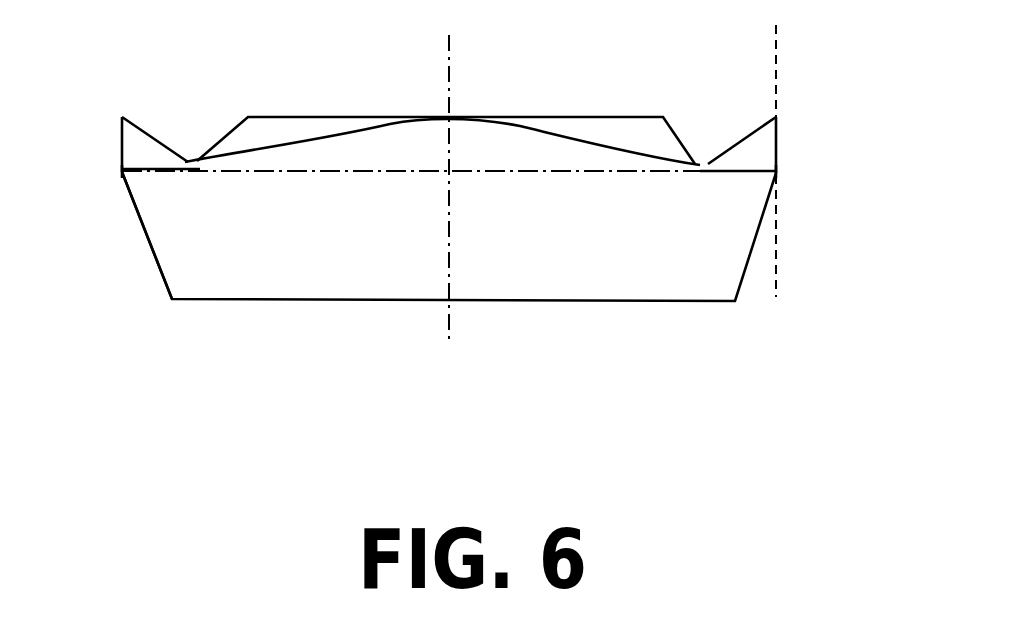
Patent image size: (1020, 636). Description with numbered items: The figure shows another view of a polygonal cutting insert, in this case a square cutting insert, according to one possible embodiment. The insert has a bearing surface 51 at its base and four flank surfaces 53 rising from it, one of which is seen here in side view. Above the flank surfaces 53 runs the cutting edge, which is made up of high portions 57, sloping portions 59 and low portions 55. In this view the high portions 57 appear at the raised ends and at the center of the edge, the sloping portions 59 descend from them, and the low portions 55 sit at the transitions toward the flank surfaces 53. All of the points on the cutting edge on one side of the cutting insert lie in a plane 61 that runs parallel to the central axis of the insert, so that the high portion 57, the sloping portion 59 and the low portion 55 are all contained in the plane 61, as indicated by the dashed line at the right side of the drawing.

The bearing surface 51 is at (380, 302).
The flank surface 53 is at (147, 242).
The low portion 55 is at (122, 172).
The high portion 57 is at (122, 117).
The sloping portion 59 is at (575, 142).
The plane 61 is at (776, 68).